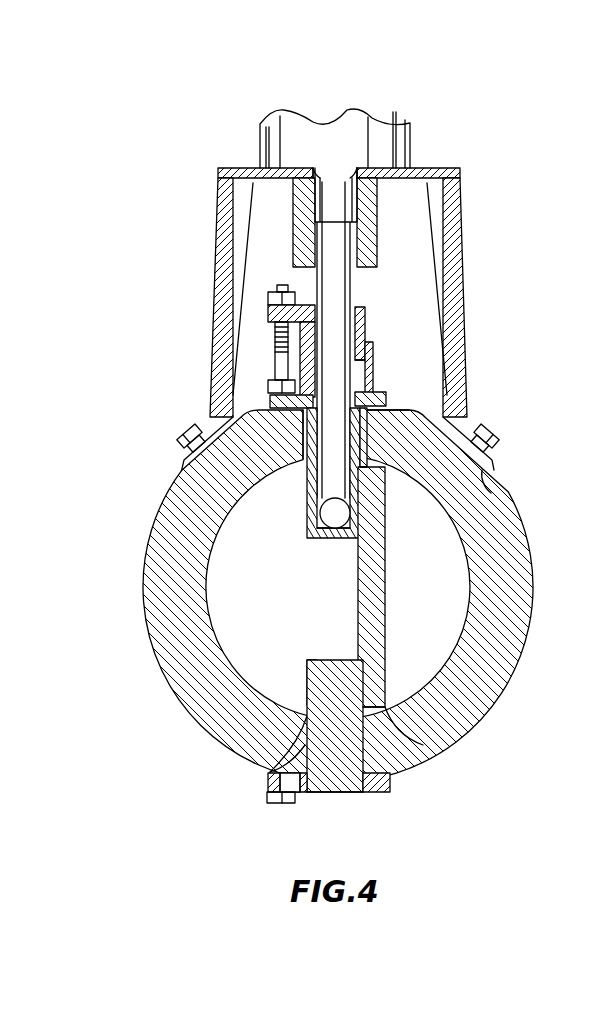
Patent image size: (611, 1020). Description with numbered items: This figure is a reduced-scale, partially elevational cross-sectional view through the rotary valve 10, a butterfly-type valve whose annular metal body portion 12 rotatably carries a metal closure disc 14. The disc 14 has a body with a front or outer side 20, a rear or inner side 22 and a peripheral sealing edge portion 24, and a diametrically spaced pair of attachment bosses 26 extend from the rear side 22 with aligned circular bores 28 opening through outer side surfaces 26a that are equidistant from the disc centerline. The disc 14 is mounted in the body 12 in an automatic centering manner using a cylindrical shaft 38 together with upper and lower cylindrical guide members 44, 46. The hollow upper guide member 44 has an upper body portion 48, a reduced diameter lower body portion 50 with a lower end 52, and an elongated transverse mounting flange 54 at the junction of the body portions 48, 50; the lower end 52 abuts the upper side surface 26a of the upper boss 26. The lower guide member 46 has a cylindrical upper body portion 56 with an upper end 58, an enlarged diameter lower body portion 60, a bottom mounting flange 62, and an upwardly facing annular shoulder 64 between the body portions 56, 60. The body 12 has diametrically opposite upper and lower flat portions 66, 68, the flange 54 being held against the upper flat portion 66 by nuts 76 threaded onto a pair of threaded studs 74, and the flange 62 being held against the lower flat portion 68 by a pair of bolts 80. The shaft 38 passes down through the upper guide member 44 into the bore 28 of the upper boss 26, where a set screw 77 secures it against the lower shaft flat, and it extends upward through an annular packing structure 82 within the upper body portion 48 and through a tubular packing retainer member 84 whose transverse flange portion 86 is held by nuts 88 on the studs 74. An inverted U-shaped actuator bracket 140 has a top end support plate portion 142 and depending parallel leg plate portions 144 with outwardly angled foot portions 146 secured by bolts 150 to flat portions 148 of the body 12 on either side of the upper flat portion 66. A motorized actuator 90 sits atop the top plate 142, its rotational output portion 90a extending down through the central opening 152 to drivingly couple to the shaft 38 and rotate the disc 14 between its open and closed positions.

The rotary valve 10 is at (545, 378).
The annular metal body portion 12 is at (538, 588).
The metal closure disc 14 is at (390, 628).
The front or outer side 20 is at (387, 598).
The rear or inner side 22 is at (360, 565).
The peripheral sealing edge portion 24 is at (350, 745).
The attachment bosses 26 is at (306, 510).
The outer side surfaces 26a is at (333, 439).
The circularly cross-sectioned bores 28 is at (314, 532).
The cylindrical shaft 38 is at (337, 278).
The upper cylindrical guide member 44 is at (376, 359).
The lower cylindrical guide member 46 is at (345, 794).
The upper body portion 48 is at (369, 356).
The reduced diameter lower body portion 50 is at (400, 425).
The lower end 52 is at (198, 478).
The elongated transverse mounting flange 54 is at (387, 404).
The cylindrical upper body portion 56 is at (330, 660).
The upper end 58 is at (348, 662).
The enlarged diameter cylindrical lower body portion 60 is at (388, 777).
The elongated transverse mounting flange 62 is at (392, 790).
The upwardly facing annular shoulder 64 is at (300, 718).
The upper flat portion 66 is at (274, 401).
The lower flat portion 68 is at (307, 792).
The threaded studs 74 is at (270, 314).
The nuts 76 is at (276, 350).
The set screw 77 is at (333, 522).
The bolts 80 is at (280, 803).
The annular packing structure 82 is at (384, 396).
The tubular packing retainer member 84 is at (362, 313).
The transverse flange portion 86 is at (268, 300).
The nuts 88 is at (278, 290).
The motorized actuator 90 is at (374, 107).
The rotational output portion 90a is at (325, 172).
The actuator bracket 140 is at (466, 194).
The top end support plate portion 142 is at (461, 167).
The depending parallel leg plate portions 144 is at (217, 192).
The outwardly angled foot portions 146 is at (485, 491).
The flat portions 148 is at (498, 478).
The bolts 150 is at (195, 432).
The central upper end plate opening 152 is at (333, 170).